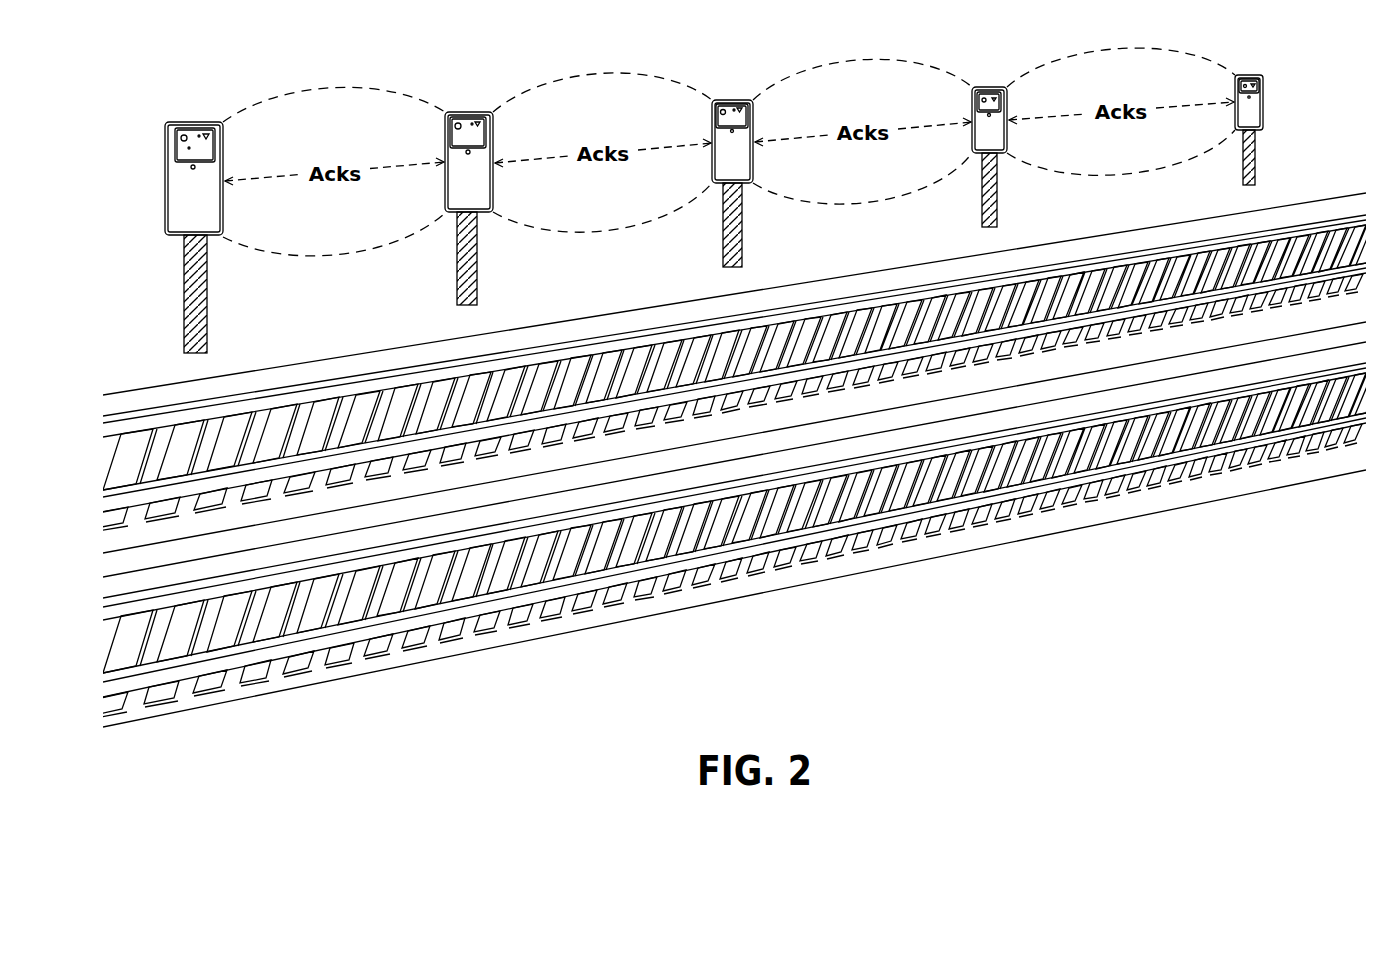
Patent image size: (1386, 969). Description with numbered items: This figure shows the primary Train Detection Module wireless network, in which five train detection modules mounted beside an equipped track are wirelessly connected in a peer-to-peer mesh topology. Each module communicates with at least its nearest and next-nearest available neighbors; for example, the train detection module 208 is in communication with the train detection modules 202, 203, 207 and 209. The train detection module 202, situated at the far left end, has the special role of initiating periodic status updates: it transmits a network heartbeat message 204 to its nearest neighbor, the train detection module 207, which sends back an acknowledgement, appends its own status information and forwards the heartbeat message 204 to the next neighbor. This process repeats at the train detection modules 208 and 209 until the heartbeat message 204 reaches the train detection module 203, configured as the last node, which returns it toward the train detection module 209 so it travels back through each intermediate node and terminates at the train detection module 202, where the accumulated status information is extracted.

The train detection module 202 is at (225, 148).
The train detection module 203 is at (1258, 76).
The network heartbeat message 204 is at (367, 90).
The train detection module 207 is at (495, 137).
The train detection module 208 is at (755, 118).
The train detection module 209 is at (1010, 105).